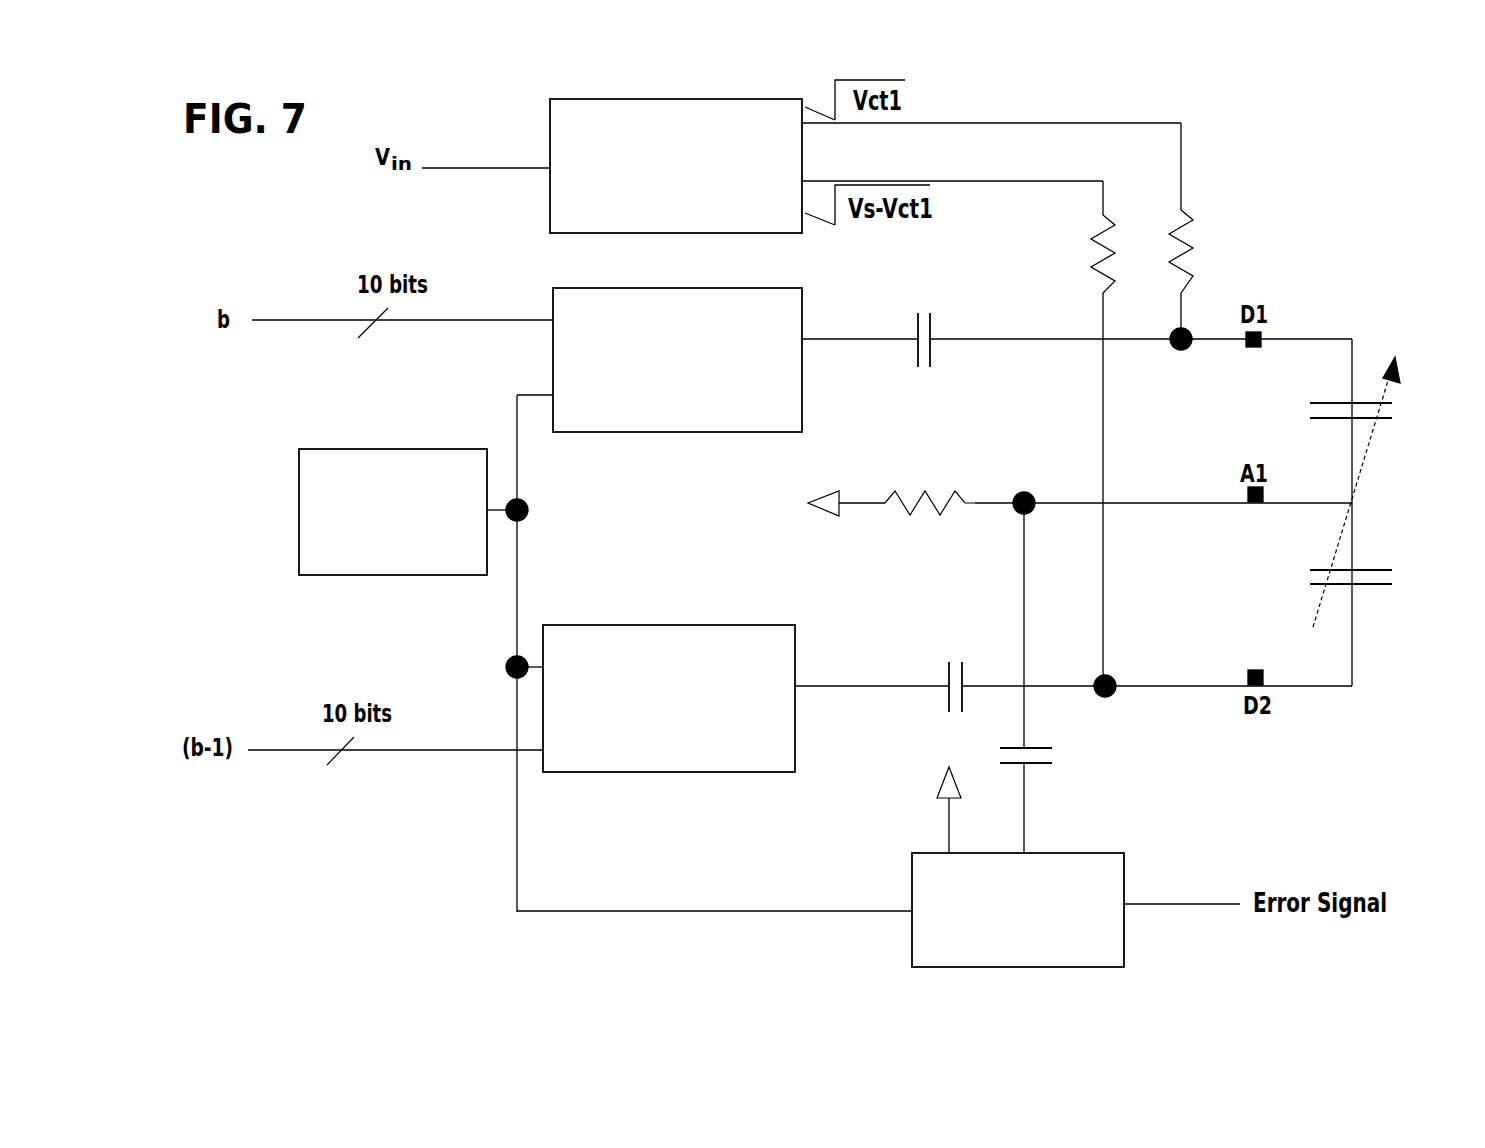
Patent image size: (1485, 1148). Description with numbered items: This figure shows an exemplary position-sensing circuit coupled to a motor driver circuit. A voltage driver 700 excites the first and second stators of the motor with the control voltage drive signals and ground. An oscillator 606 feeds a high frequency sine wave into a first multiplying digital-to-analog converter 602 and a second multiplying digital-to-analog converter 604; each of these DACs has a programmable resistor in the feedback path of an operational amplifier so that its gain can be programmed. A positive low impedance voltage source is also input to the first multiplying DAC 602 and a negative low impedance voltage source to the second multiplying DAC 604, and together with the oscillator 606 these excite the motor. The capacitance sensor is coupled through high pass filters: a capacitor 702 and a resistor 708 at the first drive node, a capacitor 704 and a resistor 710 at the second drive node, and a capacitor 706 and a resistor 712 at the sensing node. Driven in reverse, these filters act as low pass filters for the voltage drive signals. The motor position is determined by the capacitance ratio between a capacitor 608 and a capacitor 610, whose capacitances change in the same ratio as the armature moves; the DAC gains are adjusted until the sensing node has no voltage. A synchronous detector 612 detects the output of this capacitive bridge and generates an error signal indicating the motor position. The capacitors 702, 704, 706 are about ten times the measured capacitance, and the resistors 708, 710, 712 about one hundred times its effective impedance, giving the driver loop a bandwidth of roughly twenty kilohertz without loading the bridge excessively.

The voltage driver 700 is at (676, 166).
The capacitor 702 is at (919, 324).
The capacitor 704 is at (952, 671).
The capacitor 706 is at (1052, 755).
The resistor 708 is at (1205, 231).
The resistor 710 is at (1075, 433).
The resistor 712 is at (930, 486).
The first multiplying digital-to-analog converter 602 is at (677, 360).
The second multiplying digital-to-analog converter 604 is at (669, 698).
The oscillator 606 is at (393, 512).
The capacitor 608 is at (1377, 410).
The capacitor 610 is at (1377, 577).
The synchronous detector 612 is at (1018, 910).